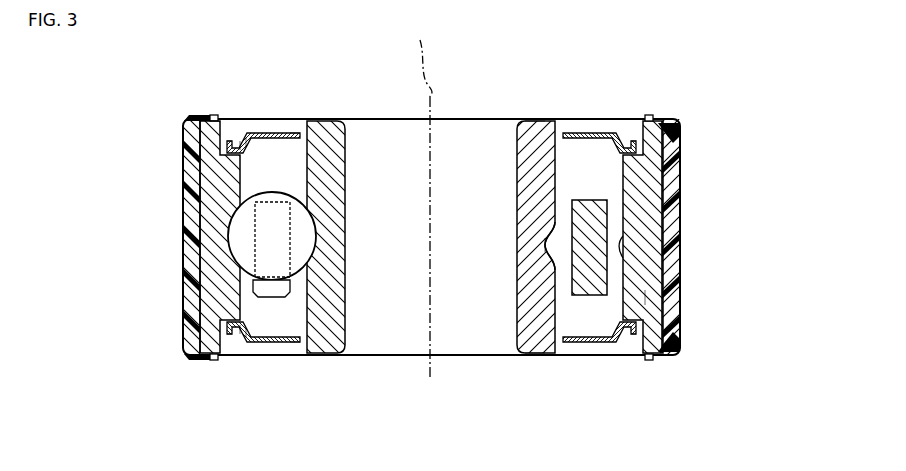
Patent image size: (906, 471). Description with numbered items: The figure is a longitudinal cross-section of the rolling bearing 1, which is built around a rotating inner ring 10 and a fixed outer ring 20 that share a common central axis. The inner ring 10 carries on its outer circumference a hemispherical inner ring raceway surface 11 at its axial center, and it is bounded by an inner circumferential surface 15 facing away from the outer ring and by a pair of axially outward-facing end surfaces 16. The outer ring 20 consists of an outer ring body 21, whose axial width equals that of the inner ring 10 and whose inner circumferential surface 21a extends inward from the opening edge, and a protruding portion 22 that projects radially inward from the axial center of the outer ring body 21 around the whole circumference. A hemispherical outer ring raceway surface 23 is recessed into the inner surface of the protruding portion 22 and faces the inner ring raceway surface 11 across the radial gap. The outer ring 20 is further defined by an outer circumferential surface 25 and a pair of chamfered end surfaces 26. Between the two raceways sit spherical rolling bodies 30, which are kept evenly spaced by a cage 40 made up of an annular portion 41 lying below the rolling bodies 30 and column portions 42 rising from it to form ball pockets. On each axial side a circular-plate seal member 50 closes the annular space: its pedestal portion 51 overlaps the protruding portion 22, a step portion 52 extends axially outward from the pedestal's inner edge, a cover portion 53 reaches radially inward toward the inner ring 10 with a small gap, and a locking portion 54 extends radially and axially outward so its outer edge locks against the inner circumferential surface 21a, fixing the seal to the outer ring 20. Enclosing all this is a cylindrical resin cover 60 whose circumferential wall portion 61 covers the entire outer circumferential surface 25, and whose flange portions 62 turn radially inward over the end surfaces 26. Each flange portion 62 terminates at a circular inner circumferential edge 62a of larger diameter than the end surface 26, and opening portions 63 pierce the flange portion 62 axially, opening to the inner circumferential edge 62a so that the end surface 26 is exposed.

The bearing 1 is at (714, 66).
The inner ring 10 is at (511, 157).
The inner ring raceway surface 11 is at (556, 268).
The inner circumferential surface 15 is at (541, 247).
The end surface 16 is at (536, 118).
The outer ring 20 is at (679, 183).
The outer ring body 21 is at (652, 136).
The inner circumferential surface 21a is at (639, 131).
The protruding portion 22 is at (624, 302).
The outer ring raceway surface 23 is at (626, 260).
The outer circumferential surface 25 is at (647, 300).
The end surface 26 is at (648, 116).
The rolling body 30 is at (236, 236).
The cage 40 is at (619, 219).
The annular portion 41 is at (272, 288).
The column portion 42 is at (254, 232).
The seal member 50 is at (283, 124).
The pedestal portion 51 is at (242, 140).
The step portion 52 is at (247, 140).
The cover portion 53 is at (296, 132).
The locking portion 54 is at (222, 143).
The resin cover 60 is at (176, 166).
The circumferential wall portion 61 is at (212, 265).
The flange portion 62 is at (194, 117).
The inner circumferential edge 62a is at (225, 116).
The opening portion 63 is at (657, 117).